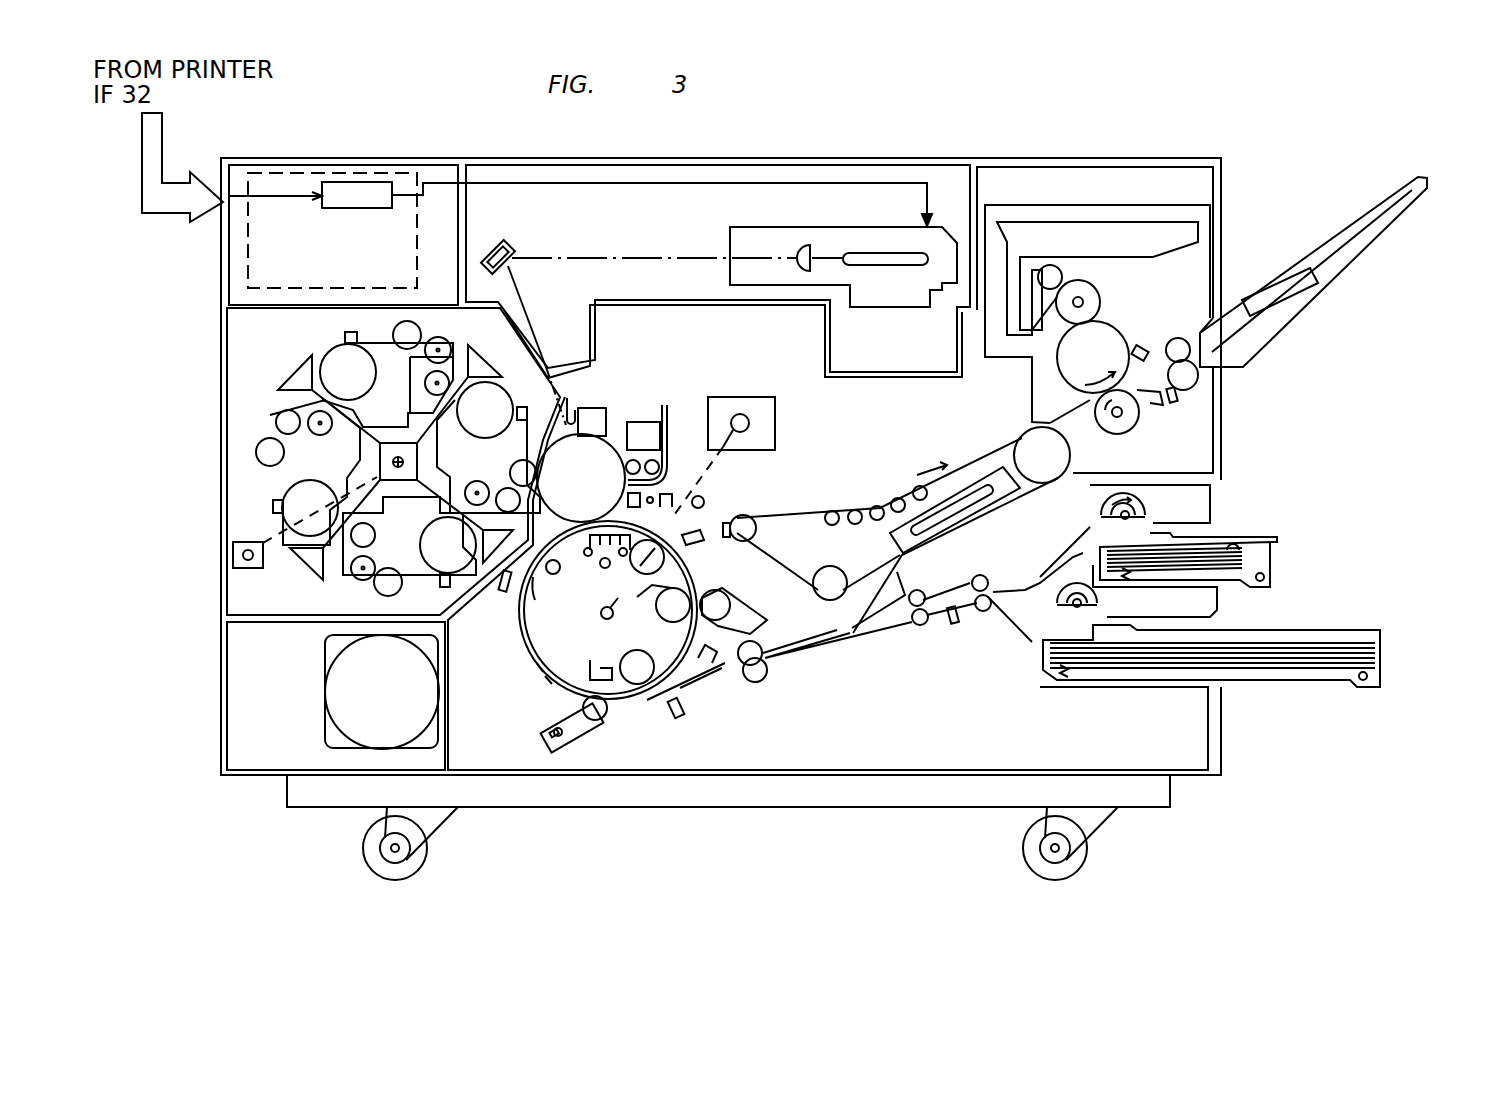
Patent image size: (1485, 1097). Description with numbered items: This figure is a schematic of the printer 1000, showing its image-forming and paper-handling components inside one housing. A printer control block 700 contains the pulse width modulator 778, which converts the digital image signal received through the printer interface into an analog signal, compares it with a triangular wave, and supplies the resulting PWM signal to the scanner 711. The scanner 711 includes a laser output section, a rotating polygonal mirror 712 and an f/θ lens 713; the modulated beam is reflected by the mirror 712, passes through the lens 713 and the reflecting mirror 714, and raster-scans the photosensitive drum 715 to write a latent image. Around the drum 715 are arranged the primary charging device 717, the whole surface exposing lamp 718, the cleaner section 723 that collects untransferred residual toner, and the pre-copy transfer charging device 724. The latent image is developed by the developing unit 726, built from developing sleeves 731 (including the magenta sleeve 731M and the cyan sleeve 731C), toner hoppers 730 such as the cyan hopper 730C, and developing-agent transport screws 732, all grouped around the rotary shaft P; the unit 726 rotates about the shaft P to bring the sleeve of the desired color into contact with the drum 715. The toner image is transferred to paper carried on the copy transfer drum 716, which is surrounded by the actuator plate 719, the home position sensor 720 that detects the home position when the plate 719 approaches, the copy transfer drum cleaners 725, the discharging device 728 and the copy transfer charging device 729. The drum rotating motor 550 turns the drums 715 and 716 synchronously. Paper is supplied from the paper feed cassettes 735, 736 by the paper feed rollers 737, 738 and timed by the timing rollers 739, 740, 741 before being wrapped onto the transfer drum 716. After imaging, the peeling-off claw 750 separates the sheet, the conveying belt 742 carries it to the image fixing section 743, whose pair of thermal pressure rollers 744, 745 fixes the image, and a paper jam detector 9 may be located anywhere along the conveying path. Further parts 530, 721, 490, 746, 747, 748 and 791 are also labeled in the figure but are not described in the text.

The printer 1000 is at (1186, 160).
The printer control 700 is at (417, 260).
The pulse width modulator 778 is at (383, 208).
The scanner 711 is at (843, 228).
The polygonal mirror 712 is at (876, 266).
The f/θ lens 713 is at (797, 258).
The reflecting mirror 714 is at (511, 246).
The developing unit 726 is at (285, 378).
The rotary shaft P is at (397, 457).
The toner hopper 730 is at (430, 459).
The cyan toner hopper 730C is at (283, 505).
The screw 732 is at (438, 350).
The developing sleeve 731 is at (523, 460).
The magenta developing sleeve 731M is at (402, 590).
The cyan developing sleeve 731C is at (256, 452).
The carousel position sensor 530 is at (237, 568).
The copy transfer drum 716 is at (581, 528).
The whole surface exposing lamp 718 is at (571, 396).
The primary charging device 717 is at (603, 406).
The photosensitive drum 715 is at (618, 423).
The cleaner section 723 is at (655, 455).
The drum rotating motor 550 is at (745, 396).
The peeling-off claw 750 is at (704, 505).
The copy transfer charging device 729 is at (604, 570).
The discharging device 728 is at (590, 670).
The actuator plate 719 is at (522, 660).
The home position sensor 720 is at (552, 682).
The copy transfer drum cleaner 725 is at (712, 590).
The pre-copy transfer charging device 724 is at (506, 598).
The transfer drum cleaner 721 is at (608, 720).
The paper guide 490 is at (705, 700).
The timing roller 741 is at (757, 683).
The conveying belt 742 is at (812, 507).
The timing roller 740 is at (918, 626).
The timing roller 739 is at (983, 612).
The paper jam detector 9 is at (745, 515).
The fuser housing 748 is at (1123, 240).
The fuser oil roller 747 is at (1050, 265).
The fuser pressure roller 746 is at (1088, 293).
The thermal pressure roller 745 is at (1105, 336).
The image fixing section 743 is at (1142, 330).
The thermal pressure roller 744 is at (1128, 427).
The paper feed roller 737 is at (1147, 503).
The paper feed roller 738 is at (1060, 617).
The paper feed cassette 735 is at (1275, 560).
The paper feed cassette 736 is at (1340, 628).
The paper stack 791 is at (1257, 643).